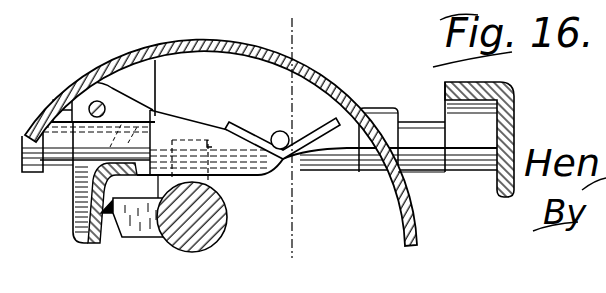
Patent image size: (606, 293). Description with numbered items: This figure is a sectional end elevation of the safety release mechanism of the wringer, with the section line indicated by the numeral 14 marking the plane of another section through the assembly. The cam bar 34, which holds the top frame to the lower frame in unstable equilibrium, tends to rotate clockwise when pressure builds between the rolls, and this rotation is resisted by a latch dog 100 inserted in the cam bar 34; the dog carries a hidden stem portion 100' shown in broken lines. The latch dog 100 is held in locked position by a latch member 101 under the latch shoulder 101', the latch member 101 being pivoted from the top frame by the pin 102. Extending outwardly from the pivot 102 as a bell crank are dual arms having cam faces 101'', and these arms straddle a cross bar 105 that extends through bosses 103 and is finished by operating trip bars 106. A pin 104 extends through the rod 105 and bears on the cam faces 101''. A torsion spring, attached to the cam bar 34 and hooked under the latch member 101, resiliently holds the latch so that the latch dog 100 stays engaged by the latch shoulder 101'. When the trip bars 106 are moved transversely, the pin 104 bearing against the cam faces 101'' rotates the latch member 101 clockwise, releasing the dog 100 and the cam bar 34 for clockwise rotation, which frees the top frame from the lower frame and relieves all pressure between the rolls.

The section line of FIG. 14 is at (301, 26).
The cam bar 34 is at (214, 197).
The latch dog 100 is at (146, 227).
The stem of block 100' is at (210, 120).
The latch member 101 is at (88, 171).
The latch shoulder 101' is at (82, 216).
The cam faces 101'' is at (282, 86).
The pin 102 is at (101, 101).
The bosses 103 is at (45, 92).
The pin 104 is at (299, 159).
The cross bar 105 is at (412, 127).
The trip bars 106 is at (515, 123).